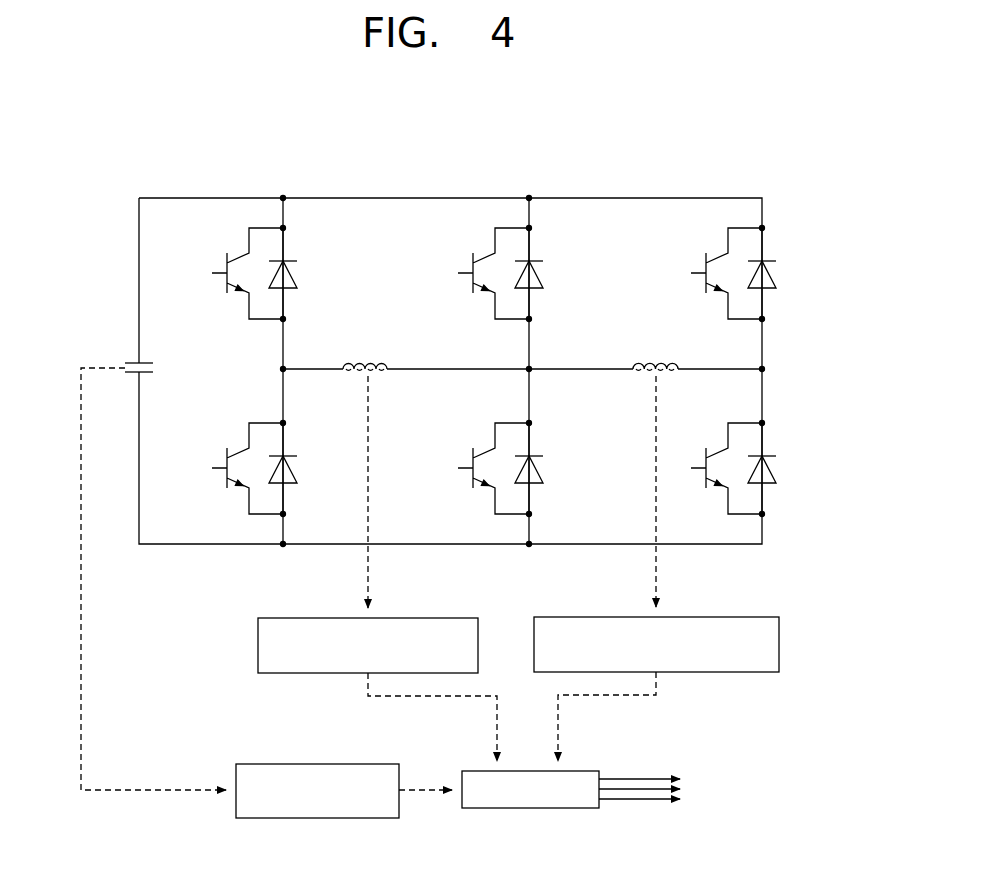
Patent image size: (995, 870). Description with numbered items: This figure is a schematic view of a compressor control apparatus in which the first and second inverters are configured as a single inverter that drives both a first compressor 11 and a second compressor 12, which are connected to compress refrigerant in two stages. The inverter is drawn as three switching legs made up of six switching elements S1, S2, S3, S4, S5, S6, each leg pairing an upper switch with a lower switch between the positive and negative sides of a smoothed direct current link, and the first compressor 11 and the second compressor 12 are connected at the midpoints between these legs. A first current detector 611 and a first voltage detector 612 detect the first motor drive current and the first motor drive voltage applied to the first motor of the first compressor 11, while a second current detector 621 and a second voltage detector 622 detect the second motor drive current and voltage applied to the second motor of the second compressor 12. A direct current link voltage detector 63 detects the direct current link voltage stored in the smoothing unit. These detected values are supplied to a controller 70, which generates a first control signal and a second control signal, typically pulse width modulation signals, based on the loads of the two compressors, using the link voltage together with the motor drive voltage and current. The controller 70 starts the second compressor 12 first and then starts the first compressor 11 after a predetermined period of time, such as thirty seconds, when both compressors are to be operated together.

The first compressor 11 is at (361, 362).
The second compressor 12 is at (656, 362).
The first current detector 611 is at (373, 568).
The first voltage detector 612 is at (275, 618).
The second current detector 621 is at (656, 568).
The second voltage detector 622 is at (592, 617).
The direct current (DC) link voltage detector 63 is at (328, 764).
The controller 70 is at (527, 771).
The first switch S1 is at (251, 274).
The second switch S2 is at (251, 469).
The third switch S3 is at (496, 274).
The fourth switch S4 is at (496, 469).
The fifth switch S5 is at (723, 274).
The sixth switch S6 is at (725, 469).